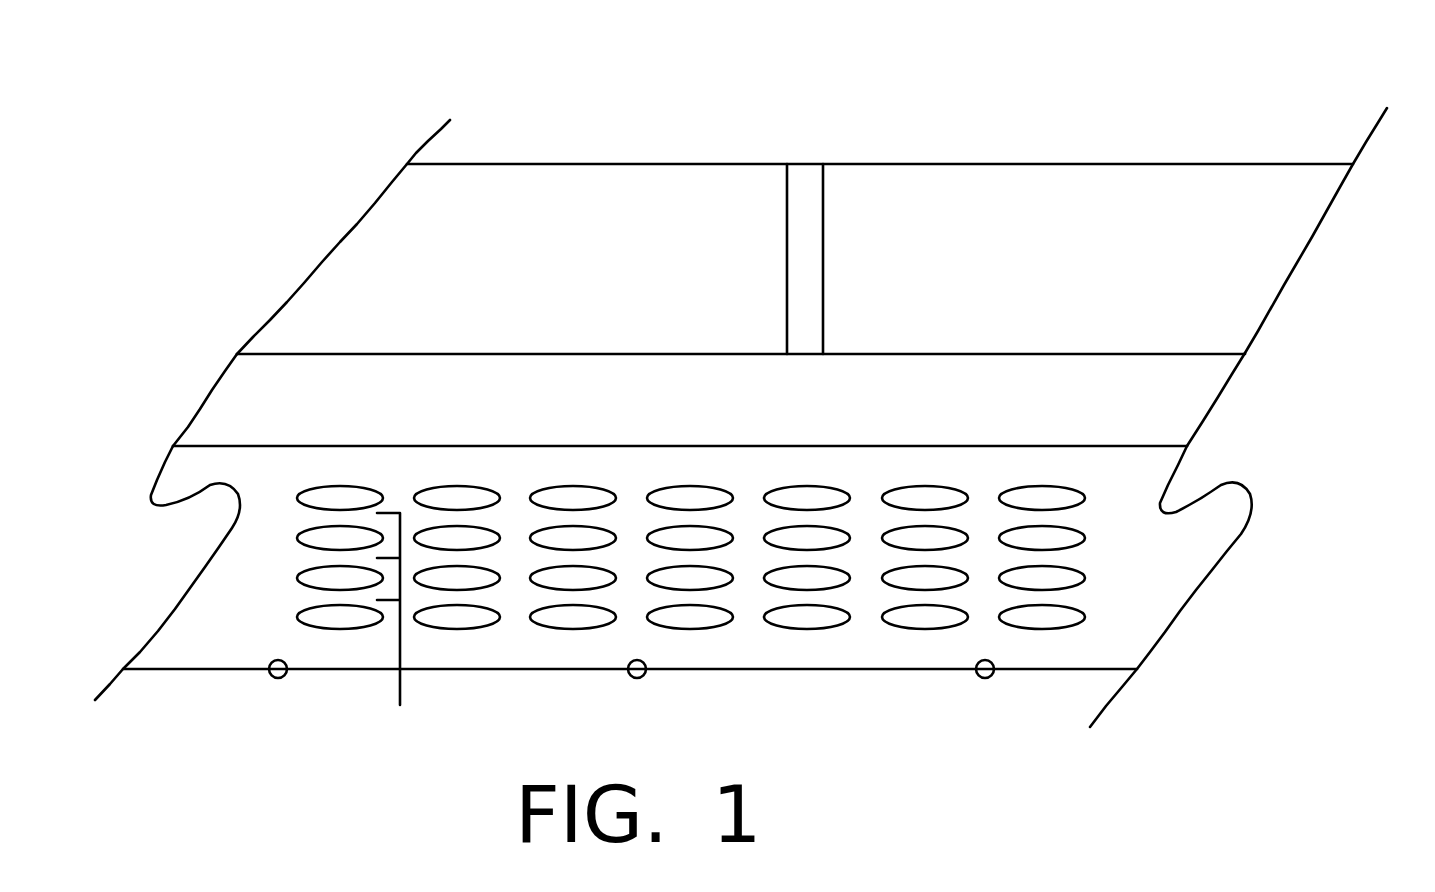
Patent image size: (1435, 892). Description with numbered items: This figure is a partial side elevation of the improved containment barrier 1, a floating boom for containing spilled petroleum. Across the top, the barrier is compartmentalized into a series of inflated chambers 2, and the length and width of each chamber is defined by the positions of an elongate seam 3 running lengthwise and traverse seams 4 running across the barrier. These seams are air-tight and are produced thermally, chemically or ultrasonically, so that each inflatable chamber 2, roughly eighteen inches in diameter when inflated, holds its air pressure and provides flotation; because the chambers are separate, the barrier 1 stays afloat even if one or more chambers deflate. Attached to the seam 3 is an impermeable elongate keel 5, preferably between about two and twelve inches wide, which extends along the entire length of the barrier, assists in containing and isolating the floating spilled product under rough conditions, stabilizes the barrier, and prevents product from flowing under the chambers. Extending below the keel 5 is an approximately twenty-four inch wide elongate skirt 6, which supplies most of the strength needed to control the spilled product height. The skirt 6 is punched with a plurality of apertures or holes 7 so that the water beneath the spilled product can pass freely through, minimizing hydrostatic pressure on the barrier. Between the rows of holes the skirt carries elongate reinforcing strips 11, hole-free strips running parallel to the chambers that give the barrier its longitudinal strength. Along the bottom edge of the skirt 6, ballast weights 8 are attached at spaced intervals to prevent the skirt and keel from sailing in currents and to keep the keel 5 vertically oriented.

The containment barrier 1 is at (1017, 222).
The inflated chambers 2 is at (1232, 298).
The elongate seam 3 is at (415, 353).
The traverse seams 4 is at (807, 230).
The keel 5 is at (626, 420).
The skirt 6 is at (262, 597).
The apertures or holes 7 is at (922, 617).
The ballast weights 8 is at (647, 675).
The elongate reinforcing strips 11 is at (400, 637).